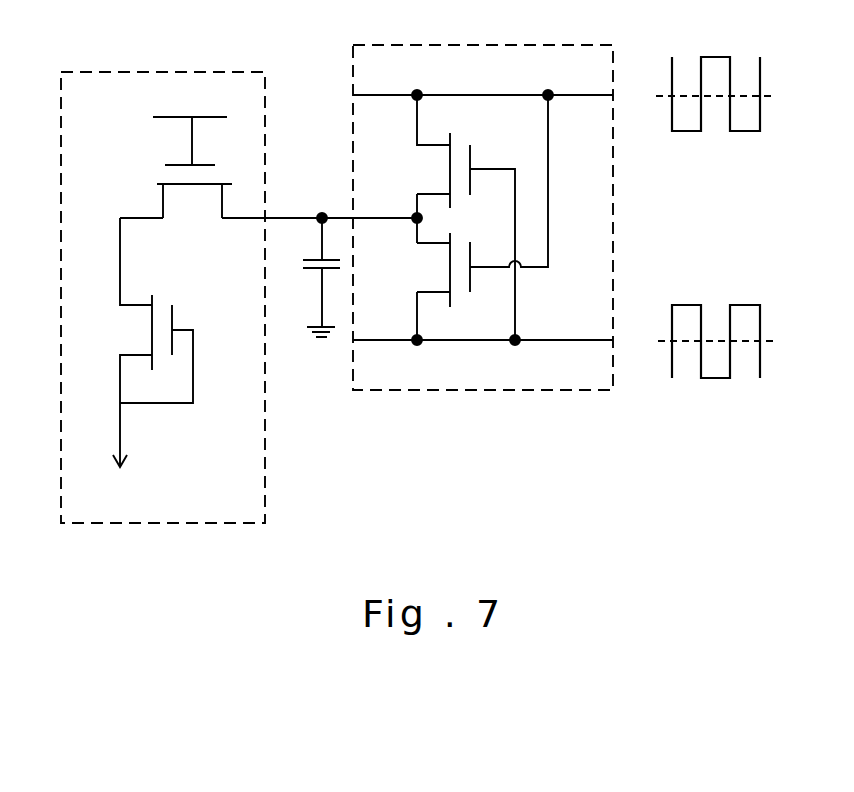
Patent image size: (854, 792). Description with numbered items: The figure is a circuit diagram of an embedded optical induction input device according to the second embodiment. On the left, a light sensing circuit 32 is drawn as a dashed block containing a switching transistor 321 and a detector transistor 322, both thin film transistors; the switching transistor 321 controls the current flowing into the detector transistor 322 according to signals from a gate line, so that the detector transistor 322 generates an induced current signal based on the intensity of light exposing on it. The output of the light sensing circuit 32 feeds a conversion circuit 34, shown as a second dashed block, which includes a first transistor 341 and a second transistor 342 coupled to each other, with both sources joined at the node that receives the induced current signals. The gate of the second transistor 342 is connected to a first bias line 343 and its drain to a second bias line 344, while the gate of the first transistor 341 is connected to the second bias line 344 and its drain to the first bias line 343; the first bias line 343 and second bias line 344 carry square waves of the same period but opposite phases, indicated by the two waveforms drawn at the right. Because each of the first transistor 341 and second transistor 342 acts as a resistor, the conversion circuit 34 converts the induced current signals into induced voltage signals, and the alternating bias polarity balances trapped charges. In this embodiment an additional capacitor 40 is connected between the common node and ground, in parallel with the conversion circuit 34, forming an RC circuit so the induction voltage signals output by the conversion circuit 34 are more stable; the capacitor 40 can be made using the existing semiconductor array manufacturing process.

The light sensing circuit 32 is at (130, 72).
The switching transistor 321 is at (167, 172).
The detector transistor 322 is at (162, 307).
The capacitor 40 is at (315, 272).
The conversion circuit 34 is at (507, 390).
The first transistor 341 is at (452, 147).
The second transistor 342 is at (452, 280).
The first bias line 343 is at (593, 97).
The second bias line 344 is at (595, 317).